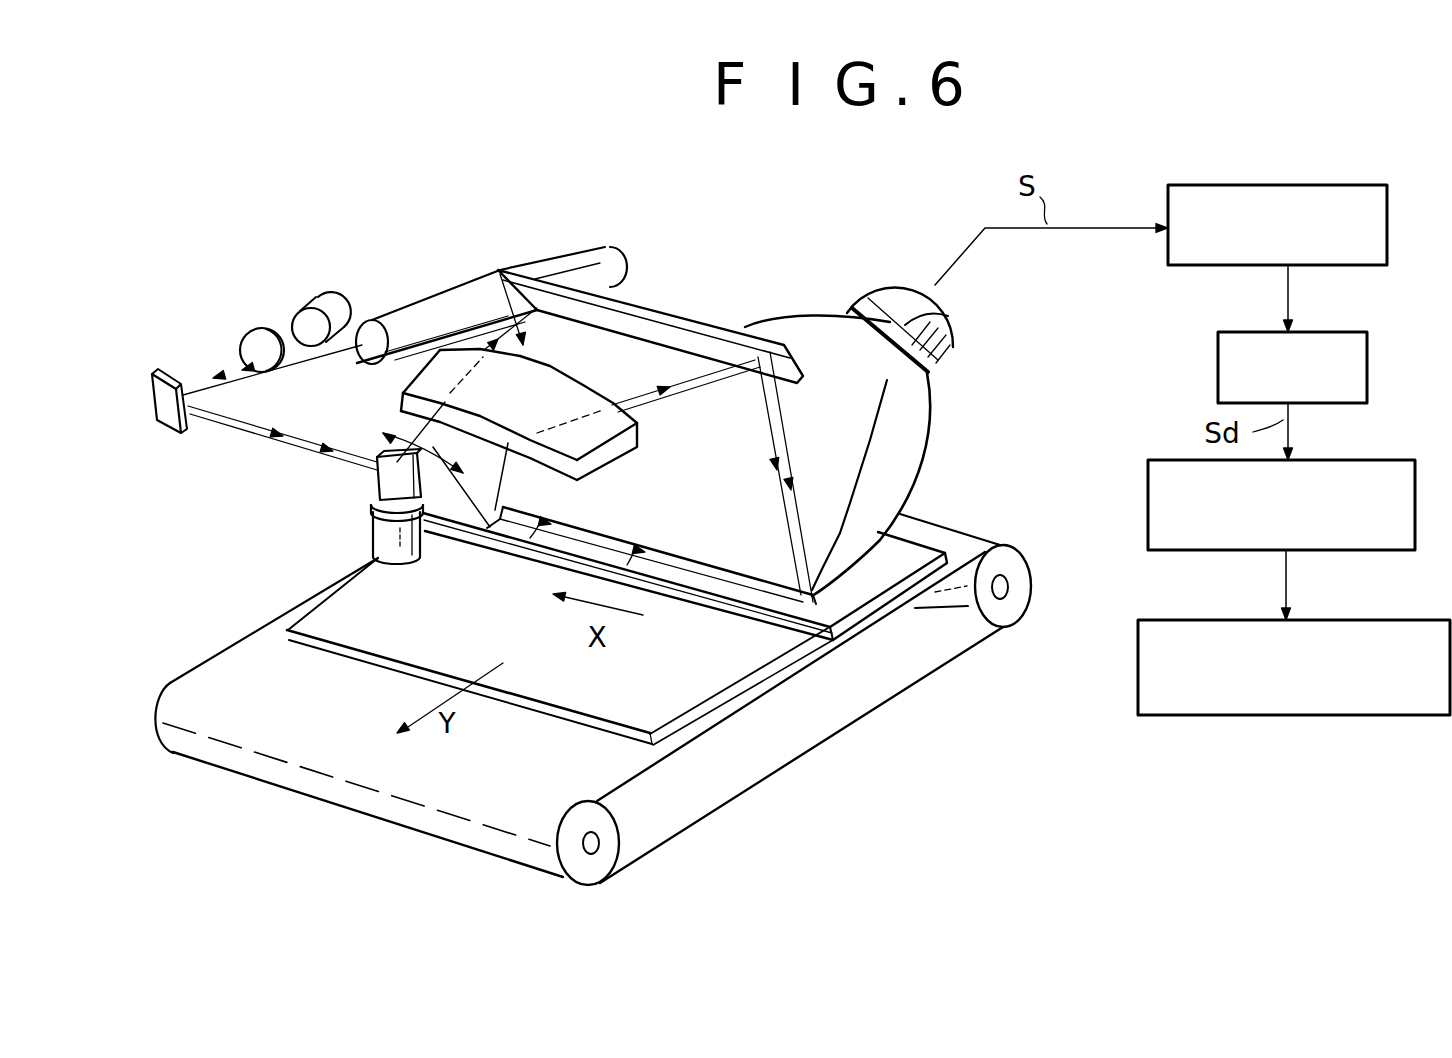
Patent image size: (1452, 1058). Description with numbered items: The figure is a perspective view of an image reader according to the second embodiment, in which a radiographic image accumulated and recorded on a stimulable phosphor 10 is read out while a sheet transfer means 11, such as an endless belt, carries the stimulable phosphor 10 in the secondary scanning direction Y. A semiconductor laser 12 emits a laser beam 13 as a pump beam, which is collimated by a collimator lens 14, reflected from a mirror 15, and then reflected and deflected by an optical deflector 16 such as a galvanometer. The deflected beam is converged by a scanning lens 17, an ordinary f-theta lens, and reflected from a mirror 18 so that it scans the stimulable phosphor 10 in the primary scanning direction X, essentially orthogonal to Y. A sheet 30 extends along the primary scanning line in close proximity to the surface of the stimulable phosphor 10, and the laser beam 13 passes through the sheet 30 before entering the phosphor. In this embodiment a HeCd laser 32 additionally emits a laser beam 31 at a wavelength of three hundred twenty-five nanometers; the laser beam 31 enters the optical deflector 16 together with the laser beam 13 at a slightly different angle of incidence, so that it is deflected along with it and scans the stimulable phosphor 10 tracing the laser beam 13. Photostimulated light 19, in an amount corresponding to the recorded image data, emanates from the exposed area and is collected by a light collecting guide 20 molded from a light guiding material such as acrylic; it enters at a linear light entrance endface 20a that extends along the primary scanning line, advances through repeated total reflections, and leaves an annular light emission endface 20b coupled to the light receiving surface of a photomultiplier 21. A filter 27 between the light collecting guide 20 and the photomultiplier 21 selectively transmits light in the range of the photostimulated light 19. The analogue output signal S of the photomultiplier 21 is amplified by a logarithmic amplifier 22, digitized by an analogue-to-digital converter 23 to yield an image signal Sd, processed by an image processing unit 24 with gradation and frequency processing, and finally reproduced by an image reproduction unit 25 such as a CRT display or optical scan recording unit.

The stimulable phosphor 10 is at (343, 613).
The sheet transfer means 11 is at (227, 676).
The semiconductor laser 12 is at (323, 293).
The laser beam 13 is at (237, 364).
The collimator lens 14 is at (258, 328).
The mirror 15 is at (160, 372).
The optical deflector 16 is at (375, 478).
The scanning lens 17 is at (405, 402).
The mirror 18 is at (505, 270).
The photostimulated light 19 is at (752, 584).
The light collecting guide 20 is at (771, 305).
The light entrance endface 20a is at (688, 560).
The light emission endface 20b is at (873, 302).
The photomultiplier 21 is at (898, 280).
The logarithmic amplifier 22 is at (1318, 185).
The analogue-to-digital converter 23 is at (1242, 332).
The image processing unit 24 is at (1148, 510).
The image reproduction unit 25 is at (1138, 658).
The filter 27 is at (943, 345).
The sheet 30 is at (865, 630).
The laser beam 31 is at (325, 378).
The HeCd laser 32 is at (445, 317).